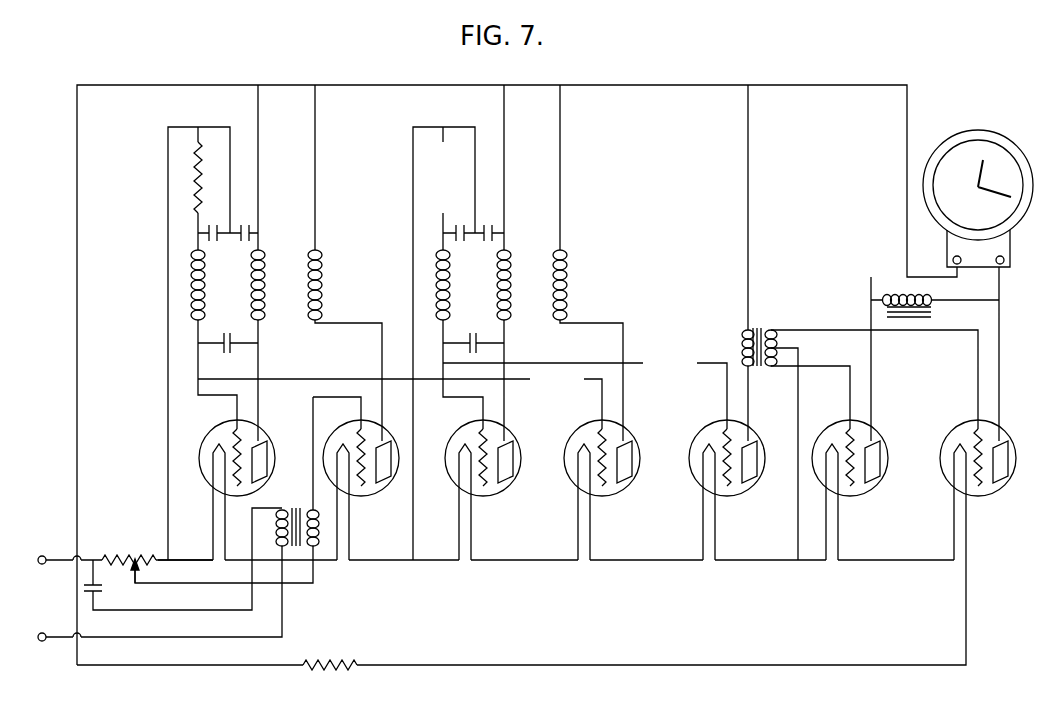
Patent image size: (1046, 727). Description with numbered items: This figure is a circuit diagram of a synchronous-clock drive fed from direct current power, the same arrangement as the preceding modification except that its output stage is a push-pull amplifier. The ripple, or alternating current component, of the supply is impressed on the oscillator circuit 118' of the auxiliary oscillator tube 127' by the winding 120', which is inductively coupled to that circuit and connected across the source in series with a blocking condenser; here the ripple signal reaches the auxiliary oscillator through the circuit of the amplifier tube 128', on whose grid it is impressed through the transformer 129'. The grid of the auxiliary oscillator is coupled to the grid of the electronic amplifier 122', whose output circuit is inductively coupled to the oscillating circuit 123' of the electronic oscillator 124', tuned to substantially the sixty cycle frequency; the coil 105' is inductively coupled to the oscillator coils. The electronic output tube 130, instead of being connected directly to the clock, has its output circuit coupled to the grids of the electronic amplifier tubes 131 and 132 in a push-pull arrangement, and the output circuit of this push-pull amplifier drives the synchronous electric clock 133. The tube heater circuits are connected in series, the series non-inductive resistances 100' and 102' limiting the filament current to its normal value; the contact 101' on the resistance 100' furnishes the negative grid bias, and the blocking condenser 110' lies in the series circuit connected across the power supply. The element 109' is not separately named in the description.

The resistor 109' is at (159, 177).
The oscillator circuit 118' is at (165, 285).
The winding 120' is at (316, 285).
The oscillating circuit 123' is at (433, 285).
The coil 105' is at (588, 285).
The auxiliary oscillator tube 127' is at (251, 482).
The amplifier tube 128' is at (392, 482).
The electronic oscillator 124' is at (502, 488).
The electronic amplifier 122' is at (625, 489).
The electronic output tube 130 is at (770, 439).
The electronic amplifier tube 131 is at (897, 441).
The electronic amplifier tube 132 is at (934, 478).
The transformer 129' is at (295, 513).
The synchronous electric clock 133 is at (948, 137).
The series non-inductive resistance 100' is at (129, 544).
The contact 101' is at (164, 572).
The blocking condenser 110' is at (124, 598).
The series non-inductive resistance 102' is at (330, 681).